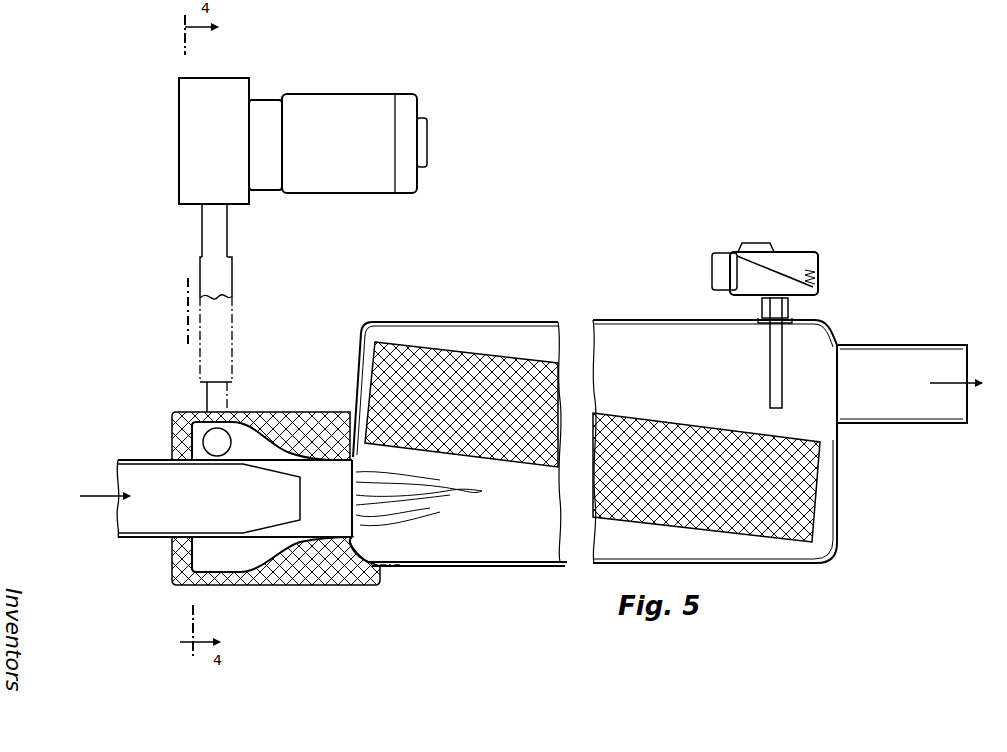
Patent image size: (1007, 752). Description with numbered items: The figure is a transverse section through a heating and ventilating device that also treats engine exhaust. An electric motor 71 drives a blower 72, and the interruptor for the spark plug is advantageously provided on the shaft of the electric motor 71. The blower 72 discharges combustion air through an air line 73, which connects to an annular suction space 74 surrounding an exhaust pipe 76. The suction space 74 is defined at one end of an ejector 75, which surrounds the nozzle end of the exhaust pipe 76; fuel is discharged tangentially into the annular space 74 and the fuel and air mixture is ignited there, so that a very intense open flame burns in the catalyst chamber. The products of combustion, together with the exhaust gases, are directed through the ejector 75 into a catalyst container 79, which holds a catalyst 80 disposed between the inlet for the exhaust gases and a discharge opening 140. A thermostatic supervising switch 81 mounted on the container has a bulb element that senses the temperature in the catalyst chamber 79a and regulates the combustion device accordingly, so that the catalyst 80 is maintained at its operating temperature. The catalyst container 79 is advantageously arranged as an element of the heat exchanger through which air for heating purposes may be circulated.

The electric motor 71 is at (362, 110).
The blower 72 is at (213, 100).
The air line 73 is at (215, 238).
The annular suction space 74 is at (188, 427).
The ejector 75 is at (272, 412).
The exhaust pipe 76 is at (124, 460).
The catalyst container 79 is at (622, 320).
The catalyst chamber 79a is at (481, 548).
The catalyst 80 is at (467, 358).
The thermostatic supervising switch 81 is at (792, 259).
The discharge opening 140 is at (908, 415).